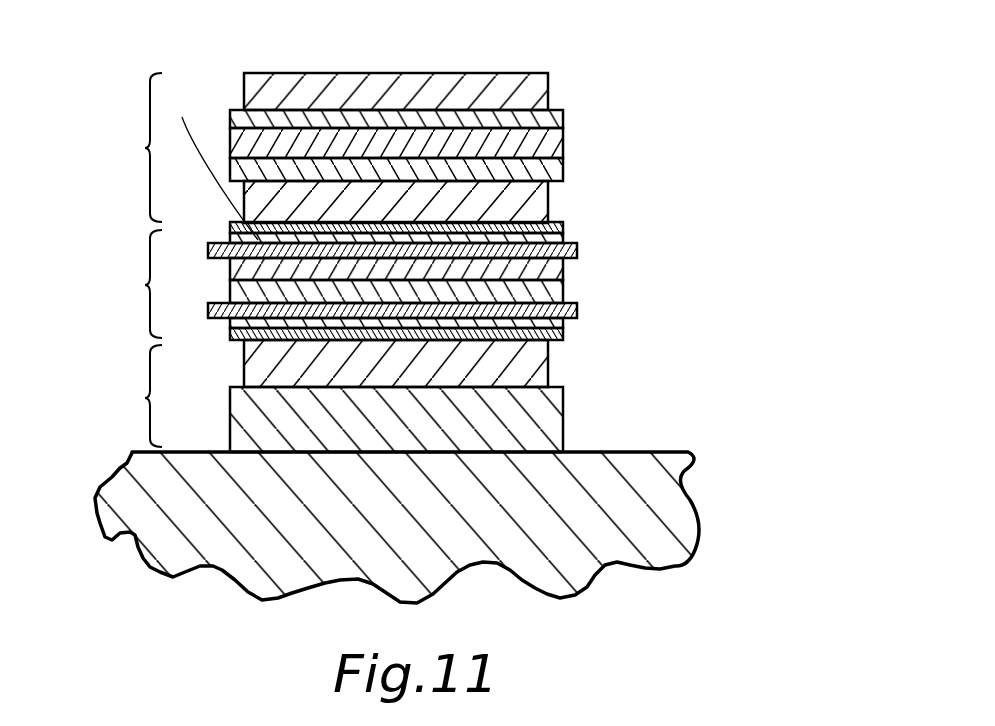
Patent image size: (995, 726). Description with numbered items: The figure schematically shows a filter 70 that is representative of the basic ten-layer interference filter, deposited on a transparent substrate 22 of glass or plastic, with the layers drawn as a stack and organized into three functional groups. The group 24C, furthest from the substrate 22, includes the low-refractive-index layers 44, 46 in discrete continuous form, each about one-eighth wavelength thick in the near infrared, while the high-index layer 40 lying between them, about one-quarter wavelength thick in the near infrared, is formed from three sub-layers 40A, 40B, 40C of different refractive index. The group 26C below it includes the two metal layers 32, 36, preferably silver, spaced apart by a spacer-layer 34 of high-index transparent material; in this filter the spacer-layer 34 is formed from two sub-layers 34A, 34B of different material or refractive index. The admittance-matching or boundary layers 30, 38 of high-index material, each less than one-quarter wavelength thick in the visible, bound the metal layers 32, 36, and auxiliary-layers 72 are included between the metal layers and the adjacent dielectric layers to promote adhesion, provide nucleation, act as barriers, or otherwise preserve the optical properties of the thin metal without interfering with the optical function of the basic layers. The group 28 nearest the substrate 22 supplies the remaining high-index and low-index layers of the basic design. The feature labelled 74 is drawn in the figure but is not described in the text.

The substrate 22 is at (706, 537).
The first filter section 24C is at (147, 148).
The second filter section 26C is at (147, 285).
The third filter section 28 is at (147, 398).
The metal layer 30 is at (570, 228).
The spacer layer 32 is at (207, 236).
The metal layer 34 is at (570, 265).
The metal sublayer 34A is at (568, 283).
The metal sublayer 34B is at (568, 293).
The spacer layer 36 is at (205, 312).
The metal layer 38 is at (570, 332).
The dielectric layer 40 is at (471, 124).
The dielectric sublayer 40A is at (568, 120).
The dielectric sublayer 40B is at (568, 146).
The dielectric sublayer 40C is at (568, 171).
The dielectric layer 44 is at (553, 92).
The dielectric layer 46 is at (553, 200).
The bandpass filter 70 is at (518, 245).
The dielectric layer 72 is at (556, 345).
The dielectric layer 74 is at (213, 162).